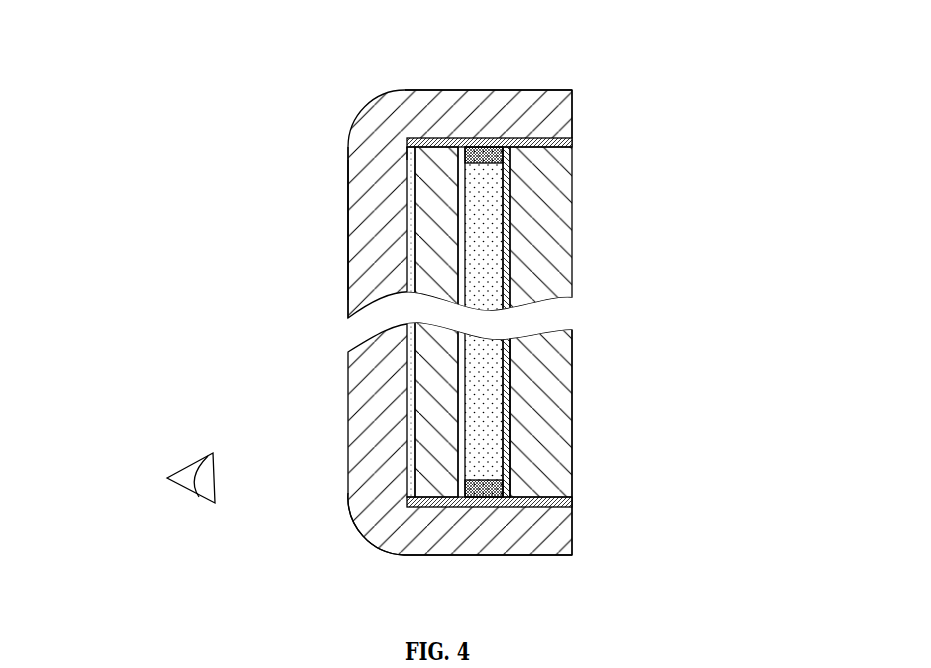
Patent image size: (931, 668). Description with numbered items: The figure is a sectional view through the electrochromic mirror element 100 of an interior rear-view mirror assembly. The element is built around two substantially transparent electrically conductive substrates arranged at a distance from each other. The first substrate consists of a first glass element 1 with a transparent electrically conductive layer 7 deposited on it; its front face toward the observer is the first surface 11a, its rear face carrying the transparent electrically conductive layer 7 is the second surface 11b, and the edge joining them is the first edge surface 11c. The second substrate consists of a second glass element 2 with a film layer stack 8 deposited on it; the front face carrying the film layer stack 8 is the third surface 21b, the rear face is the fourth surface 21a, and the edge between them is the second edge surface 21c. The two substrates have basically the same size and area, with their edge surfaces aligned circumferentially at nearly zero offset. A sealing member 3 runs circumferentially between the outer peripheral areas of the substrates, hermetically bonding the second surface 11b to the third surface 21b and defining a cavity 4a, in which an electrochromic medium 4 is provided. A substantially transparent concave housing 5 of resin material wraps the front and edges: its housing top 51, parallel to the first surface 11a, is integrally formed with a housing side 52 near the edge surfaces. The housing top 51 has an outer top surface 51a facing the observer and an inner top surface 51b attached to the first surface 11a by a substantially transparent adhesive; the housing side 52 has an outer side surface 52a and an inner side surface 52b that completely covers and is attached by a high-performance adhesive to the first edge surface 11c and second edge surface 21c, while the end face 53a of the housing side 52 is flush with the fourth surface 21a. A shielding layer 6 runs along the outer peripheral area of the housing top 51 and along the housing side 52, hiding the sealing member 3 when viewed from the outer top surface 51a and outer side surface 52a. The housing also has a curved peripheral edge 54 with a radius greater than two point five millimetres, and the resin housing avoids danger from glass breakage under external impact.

The electrochromic mirror element 100 is at (272, 42).
The first glass element 1 is at (405, 412).
The first surface 11a is at (403, 414).
The second surface 11b is at (460, 446).
The first edge surface 11c is at (430, 137).
The second glass element 2 is at (543, 413).
The fourth surface 21a is at (572, 445).
The third surface 21b is at (508, 368).
The second edge surface 21c is at (572, 132).
The sealing member 3 is at (555, 522).
The electrochromic medium 4 is at (487, 442).
The cavity 4a is at (490, 282).
The concave housing 5 is at (232, 190).
The housing top 51 is at (365, 283).
The outer top surface 51a is at (348, 306).
The inner top surface 51b is at (408, 237).
The housing side 52 is at (490, 135).
The outer side surface 52a is at (535, 138).
The inner side surface 52b is at (488, 140).
The end face 53a is at (550, 137).
The curved peripheral edge 54 is at (407, 505).
The shielding layer 6 is at (413, 172).
The transparent electrically conductive layer 7 is at (410, 400).
The film layer stack 8 is at (508, 228).